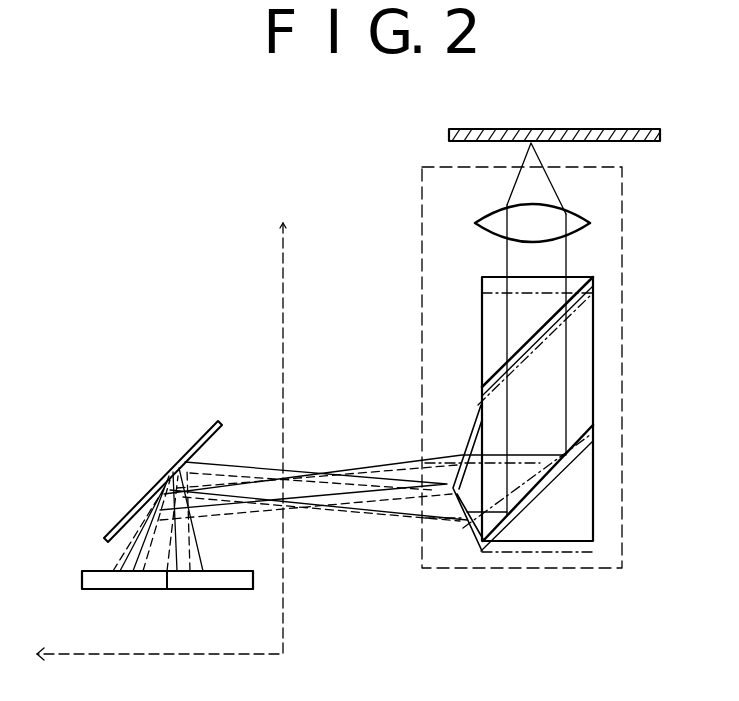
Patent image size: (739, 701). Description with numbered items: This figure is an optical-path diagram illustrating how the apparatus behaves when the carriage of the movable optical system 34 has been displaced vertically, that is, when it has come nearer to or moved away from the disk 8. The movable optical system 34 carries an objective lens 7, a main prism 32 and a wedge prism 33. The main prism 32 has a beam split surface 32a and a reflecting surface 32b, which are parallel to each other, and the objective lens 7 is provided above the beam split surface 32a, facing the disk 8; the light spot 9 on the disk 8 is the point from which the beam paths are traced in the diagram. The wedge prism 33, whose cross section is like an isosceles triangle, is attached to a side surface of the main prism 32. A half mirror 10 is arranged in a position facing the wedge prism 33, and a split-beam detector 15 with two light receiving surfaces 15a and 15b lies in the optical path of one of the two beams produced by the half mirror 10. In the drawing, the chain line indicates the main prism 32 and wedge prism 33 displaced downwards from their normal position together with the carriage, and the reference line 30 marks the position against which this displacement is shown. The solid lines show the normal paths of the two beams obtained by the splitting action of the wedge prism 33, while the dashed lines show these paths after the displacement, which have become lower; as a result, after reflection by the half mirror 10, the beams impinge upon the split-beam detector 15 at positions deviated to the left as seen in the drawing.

The objective lens 7 is at (590, 226).
The disk 8 is at (596, 129).
The light source point 9 is at (531, 129).
The half mirror 10 is at (222, 430).
The split-beam detector 15 is at (182, 583).
The light receiving surface 15a is at (237, 583).
The light receiving surface 15b is at (117, 583).
The optical axis 30 is at (285, 263).
The main prism 32 is at (612, 403).
The beam split surface 32a is at (532, 342).
The reflecting surface 32b is at (552, 477).
The wedge prism 33 is at (443, 507).
The movable optical system 34 is at (552, 568).